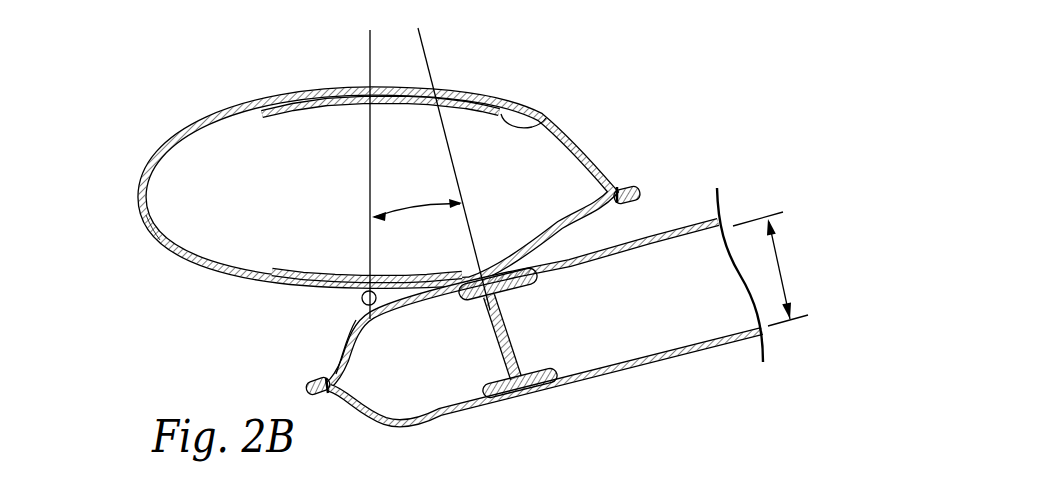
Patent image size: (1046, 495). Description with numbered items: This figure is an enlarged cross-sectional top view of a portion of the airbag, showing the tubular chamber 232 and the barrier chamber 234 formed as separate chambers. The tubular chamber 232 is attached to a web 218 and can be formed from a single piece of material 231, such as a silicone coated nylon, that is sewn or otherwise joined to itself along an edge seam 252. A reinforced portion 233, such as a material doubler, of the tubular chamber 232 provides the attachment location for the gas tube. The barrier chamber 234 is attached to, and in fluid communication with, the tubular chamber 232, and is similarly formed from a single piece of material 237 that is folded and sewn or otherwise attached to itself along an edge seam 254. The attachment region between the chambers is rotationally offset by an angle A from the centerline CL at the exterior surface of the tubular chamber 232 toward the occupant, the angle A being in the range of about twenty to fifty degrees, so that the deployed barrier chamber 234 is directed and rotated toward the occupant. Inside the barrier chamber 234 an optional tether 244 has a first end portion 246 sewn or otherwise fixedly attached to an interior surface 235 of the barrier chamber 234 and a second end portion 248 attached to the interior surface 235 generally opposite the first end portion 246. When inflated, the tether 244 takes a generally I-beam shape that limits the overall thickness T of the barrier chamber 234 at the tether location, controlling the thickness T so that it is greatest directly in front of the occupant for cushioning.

The tubular chamber 232 is at (188, 128).
The single piece of material 231 is at (152, 228).
The reinforced portion 233 is at (265, 279).
The web 218 is at (545, 122).
The edge seam 252 is at (638, 186).
The interior surface 235 is at (628, 250).
The barrier chamber 234 is at (652, 368).
The single piece of material 237 is at (722, 349).
The first end portion 246 is at (521, 298).
The second end portion 248 is at (500, 398).
The tether 244 is at (528, 347).
The edge seam 254 is at (314, 379).
The centerline CL is at (361, 302).
The angle A is at (416, 214).
The thickness T is at (778, 260).